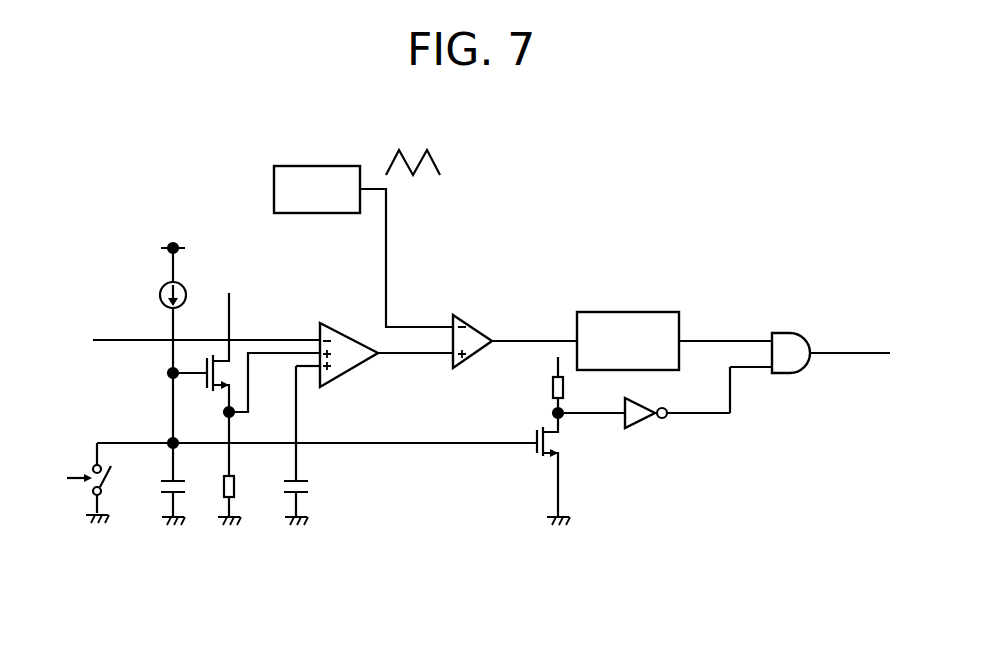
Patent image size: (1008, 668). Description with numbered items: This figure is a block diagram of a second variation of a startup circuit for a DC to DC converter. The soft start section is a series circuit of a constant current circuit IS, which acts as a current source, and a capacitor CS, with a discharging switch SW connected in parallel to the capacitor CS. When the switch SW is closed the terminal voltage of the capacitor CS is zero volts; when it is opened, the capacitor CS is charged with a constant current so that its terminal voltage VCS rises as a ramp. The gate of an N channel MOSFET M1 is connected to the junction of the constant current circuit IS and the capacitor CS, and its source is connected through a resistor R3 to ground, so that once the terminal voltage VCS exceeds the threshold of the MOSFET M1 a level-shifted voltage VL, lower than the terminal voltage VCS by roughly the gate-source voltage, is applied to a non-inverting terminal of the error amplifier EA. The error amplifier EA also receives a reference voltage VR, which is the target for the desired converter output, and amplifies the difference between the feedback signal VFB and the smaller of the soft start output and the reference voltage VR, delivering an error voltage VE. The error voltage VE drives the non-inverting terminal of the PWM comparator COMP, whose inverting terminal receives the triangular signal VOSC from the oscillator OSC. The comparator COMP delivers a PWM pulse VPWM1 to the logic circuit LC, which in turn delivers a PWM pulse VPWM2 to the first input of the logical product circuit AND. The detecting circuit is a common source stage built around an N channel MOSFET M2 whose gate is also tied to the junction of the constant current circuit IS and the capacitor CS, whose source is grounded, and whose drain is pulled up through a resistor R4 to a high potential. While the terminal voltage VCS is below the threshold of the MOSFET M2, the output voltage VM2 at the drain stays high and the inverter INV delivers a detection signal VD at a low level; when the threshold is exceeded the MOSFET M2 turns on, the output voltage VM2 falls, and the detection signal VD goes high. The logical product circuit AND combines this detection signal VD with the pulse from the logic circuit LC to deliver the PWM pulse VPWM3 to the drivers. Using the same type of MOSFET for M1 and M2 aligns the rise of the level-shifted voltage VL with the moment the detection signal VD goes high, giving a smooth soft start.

The oscillator OSC is at (317, 165).
The triangular signal VOSC is at (413, 148).
The constant current circuit IS is at (159, 308).
The feedback signal VFB is at (185, 341).
The MOSFET M1 is at (201, 355).
The level-shifted voltage VL is at (274, 382).
The terminal voltage of the capacitor VCS is at (317, 410).
The discharging switch SW is at (86, 483).
The capacitor CS is at (156, 484).
The resistor R3 is at (241, 468).
The reference voltage VR is at (312, 445).
The error amplifier EA is at (348, 330).
The error voltage VE is at (415, 367).
The PWM comparator COMP is at (475, 324).
The PWM pulse VPWM1 is at (534, 330).
The logic circuit LC is at (626, 311).
The PWM pulse VPWM2 is at (725, 330).
The logical product circuit AND is at (789, 330).
The PWM pulse VPWM3 is at (850, 344).
The pull-up resistor R4 is at (540, 385).
The output voltage VM2 is at (589, 406).
The detection signal VD is at (698, 402).
The inverter INV is at (638, 423).
The MOSFET M2 is at (544, 469).